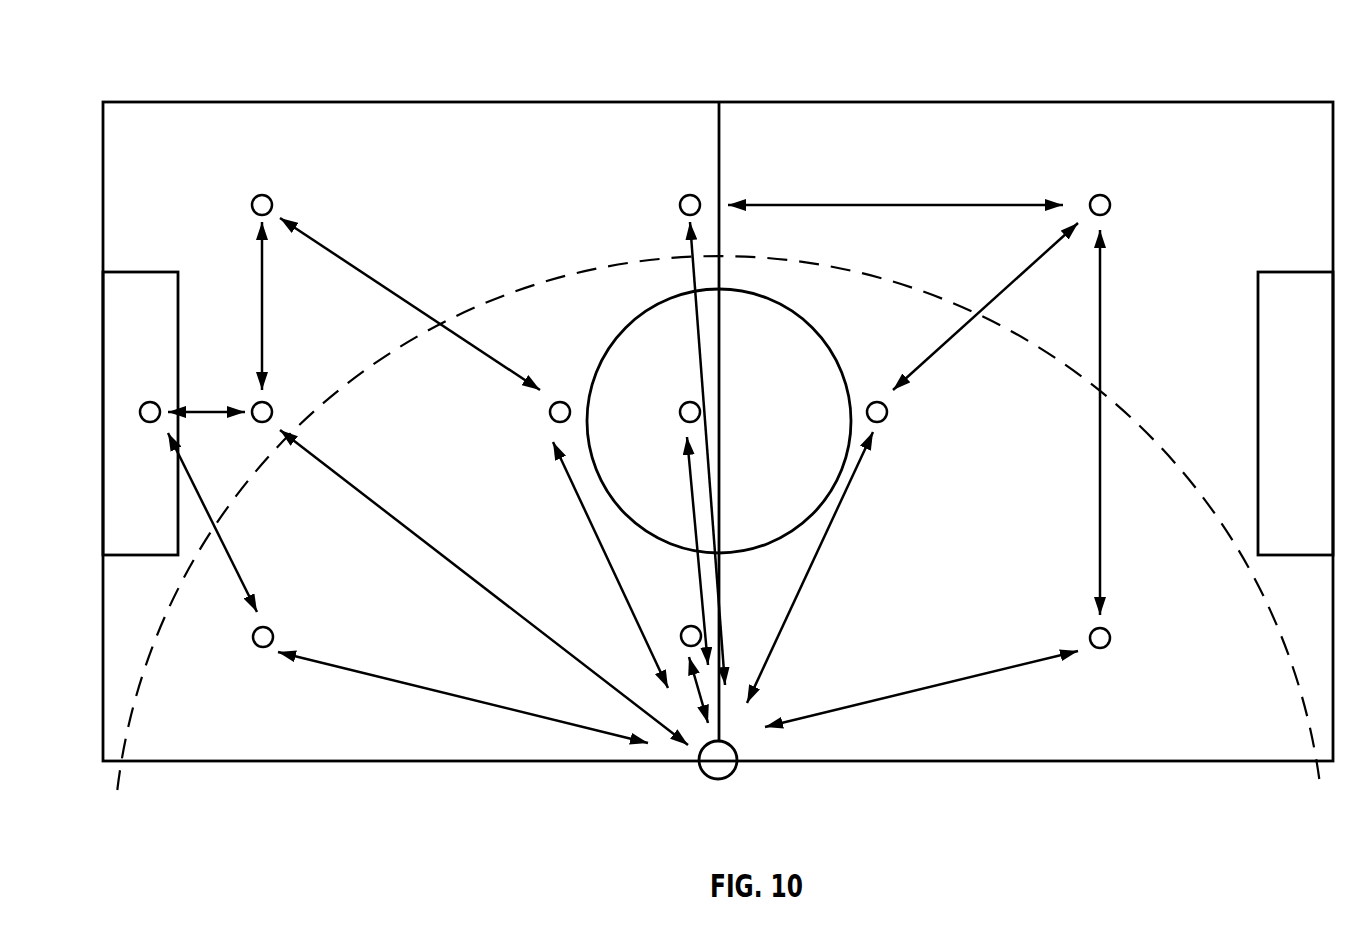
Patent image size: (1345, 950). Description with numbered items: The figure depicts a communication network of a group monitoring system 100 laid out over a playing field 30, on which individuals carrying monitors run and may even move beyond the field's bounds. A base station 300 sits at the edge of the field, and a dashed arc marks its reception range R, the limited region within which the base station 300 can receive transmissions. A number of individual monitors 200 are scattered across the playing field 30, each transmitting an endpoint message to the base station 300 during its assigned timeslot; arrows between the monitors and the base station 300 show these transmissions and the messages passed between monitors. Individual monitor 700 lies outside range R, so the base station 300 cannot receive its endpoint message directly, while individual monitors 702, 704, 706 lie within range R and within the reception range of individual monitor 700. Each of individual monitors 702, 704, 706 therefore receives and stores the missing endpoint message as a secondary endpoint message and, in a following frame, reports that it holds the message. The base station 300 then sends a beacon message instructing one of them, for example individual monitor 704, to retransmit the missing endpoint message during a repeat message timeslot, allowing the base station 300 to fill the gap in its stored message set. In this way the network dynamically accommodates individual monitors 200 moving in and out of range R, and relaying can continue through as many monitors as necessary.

The group monitoring system 100 is at (718, 443).
The playing field 30 is at (1058, 742).
The reception range R is at (492, 155).
The base station 300 is at (718, 779).
The individual monitor 200 is at (252, 203).
The individual monitor 700 is at (1110, 204).
The individual monitor 702 is at (680, 204).
The individual monitor 704 is at (887, 413).
The individual monitor 706 is at (1110, 639).